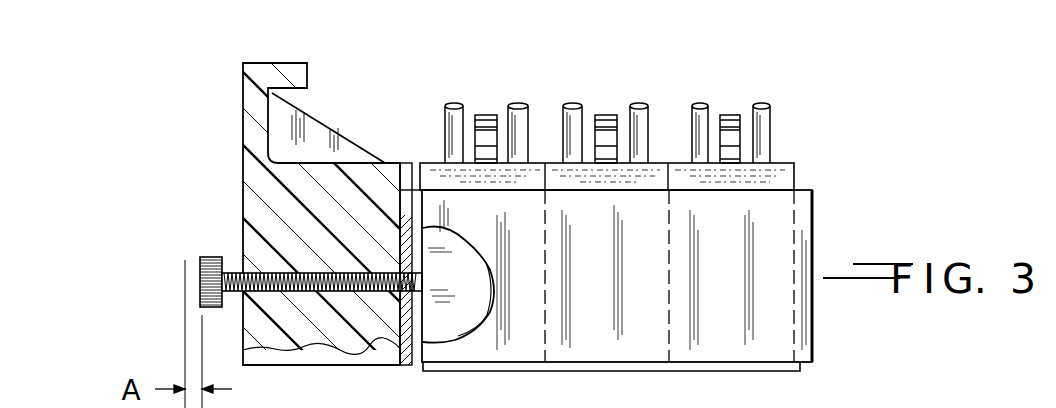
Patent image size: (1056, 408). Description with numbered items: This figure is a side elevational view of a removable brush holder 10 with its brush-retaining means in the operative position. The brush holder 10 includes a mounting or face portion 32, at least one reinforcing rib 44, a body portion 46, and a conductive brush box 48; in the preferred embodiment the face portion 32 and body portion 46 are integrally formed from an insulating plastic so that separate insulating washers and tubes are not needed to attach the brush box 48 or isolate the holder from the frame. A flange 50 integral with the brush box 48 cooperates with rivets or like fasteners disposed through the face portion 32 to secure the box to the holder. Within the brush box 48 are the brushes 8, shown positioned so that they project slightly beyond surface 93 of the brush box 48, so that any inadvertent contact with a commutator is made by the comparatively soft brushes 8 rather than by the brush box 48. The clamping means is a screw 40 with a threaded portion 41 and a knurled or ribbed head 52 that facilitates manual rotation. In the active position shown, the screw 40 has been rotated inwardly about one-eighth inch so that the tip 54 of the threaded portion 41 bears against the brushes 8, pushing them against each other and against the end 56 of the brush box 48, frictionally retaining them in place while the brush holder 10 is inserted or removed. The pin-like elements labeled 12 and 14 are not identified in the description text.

The brushes 8 is at (535, 370).
The brush holder 10 is at (822, 186).
The terminals 12 is at (484, 115).
The contact pins 14 is at (444, 110).
The face portion 32 is at (258, 72).
The screw 40 is at (258, 237).
The threaded portion 41 is at (232, 268).
The reinforcing rib 44 is at (345, 128).
The body portion 46 is at (363, 175).
The conductive brush box 48 is at (812, 232).
The flange 50 is at (405, 370).
The knurled or ribbed head 52 is at (205, 257).
The tip 54 is at (416, 282).
The end of brush box 56 is at (795, 264).
The surface of brush box 93 is at (800, 360).